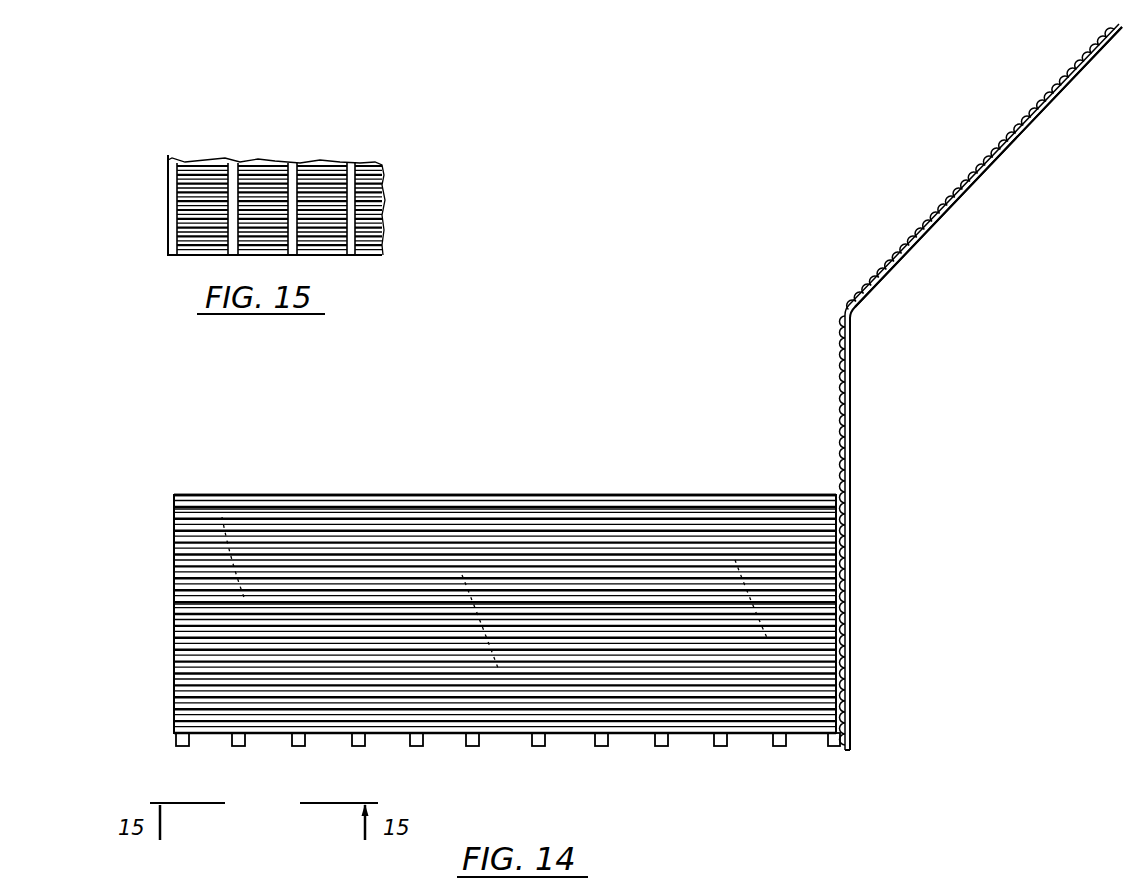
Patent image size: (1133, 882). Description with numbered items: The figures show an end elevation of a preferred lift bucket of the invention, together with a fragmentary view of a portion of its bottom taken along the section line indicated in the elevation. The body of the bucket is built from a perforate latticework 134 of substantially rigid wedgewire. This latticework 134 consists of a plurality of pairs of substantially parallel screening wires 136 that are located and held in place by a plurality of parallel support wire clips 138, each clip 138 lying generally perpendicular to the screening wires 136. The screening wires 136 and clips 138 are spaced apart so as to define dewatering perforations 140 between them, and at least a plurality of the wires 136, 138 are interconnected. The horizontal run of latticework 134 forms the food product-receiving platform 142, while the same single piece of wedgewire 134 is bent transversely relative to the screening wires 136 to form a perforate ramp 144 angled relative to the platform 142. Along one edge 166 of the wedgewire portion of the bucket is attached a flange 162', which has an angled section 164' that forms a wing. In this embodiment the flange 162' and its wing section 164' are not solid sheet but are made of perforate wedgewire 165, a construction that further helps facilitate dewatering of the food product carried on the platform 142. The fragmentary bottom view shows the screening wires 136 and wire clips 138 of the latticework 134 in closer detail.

In FIG. 15, the perforate latticework 134 is at (163, 160).
In FIG. 15, the screening wires 136 is at (199, 178).
In FIG. 14, the screening wires 136 is at (224, 518).
In FIG. 15, the support wire clips 138 is at (350, 178).
In FIG. 14, the support wire clips 138 is at (178, 746).
In FIG. 14, the dewatering perforations 140 is at (171, 511).
In FIG. 14, the food product-receiving platform 142 is at (452, 623).
In FIG. 14, the perforate ramp 144 is at (510, 491).
In FIG. 14, the flange 162' is at (918, 417).
In FIG. 14, the angled section 164' is at (988, 167).
In FIG. 14, the perforate wedgewire 165 is at (905, 229).
In FIG. 14, the edge 166 is at (841, 752).